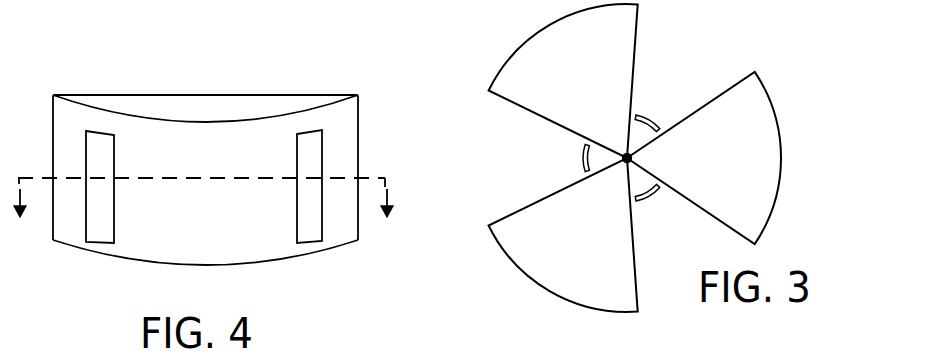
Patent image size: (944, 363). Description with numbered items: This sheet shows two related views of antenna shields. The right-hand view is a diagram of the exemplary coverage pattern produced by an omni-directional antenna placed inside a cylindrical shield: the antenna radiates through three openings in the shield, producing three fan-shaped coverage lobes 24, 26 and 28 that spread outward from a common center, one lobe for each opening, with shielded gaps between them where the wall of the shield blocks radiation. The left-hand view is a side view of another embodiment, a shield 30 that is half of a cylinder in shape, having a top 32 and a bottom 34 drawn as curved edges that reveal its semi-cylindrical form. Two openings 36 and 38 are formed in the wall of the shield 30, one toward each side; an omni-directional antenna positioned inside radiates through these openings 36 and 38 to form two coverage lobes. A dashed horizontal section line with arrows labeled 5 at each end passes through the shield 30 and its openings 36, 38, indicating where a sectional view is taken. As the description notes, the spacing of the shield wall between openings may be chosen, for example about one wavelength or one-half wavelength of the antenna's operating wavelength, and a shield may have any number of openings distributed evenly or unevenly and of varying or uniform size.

In FIG. 4, the shield 30 is at (205, 170).
In FIG. 4, the top 32 is at (213, 107).
In FIG. 4, the bottom 34 is at (168, 262).
In FIG. 4, the opening 36 is at (103, 232).
In FIG. 4, the opening 38 is at (303, 230).
In FIG. 4, the section line 5- 5 is at (203, 211).
In FIG. 3, the coverage lobe 24 is at (532, 282).
In FIG. 3, the coverage lobe 26 is at (777, 108).
In FIG. 3, the coverage lobe 28 is at (516, 43).